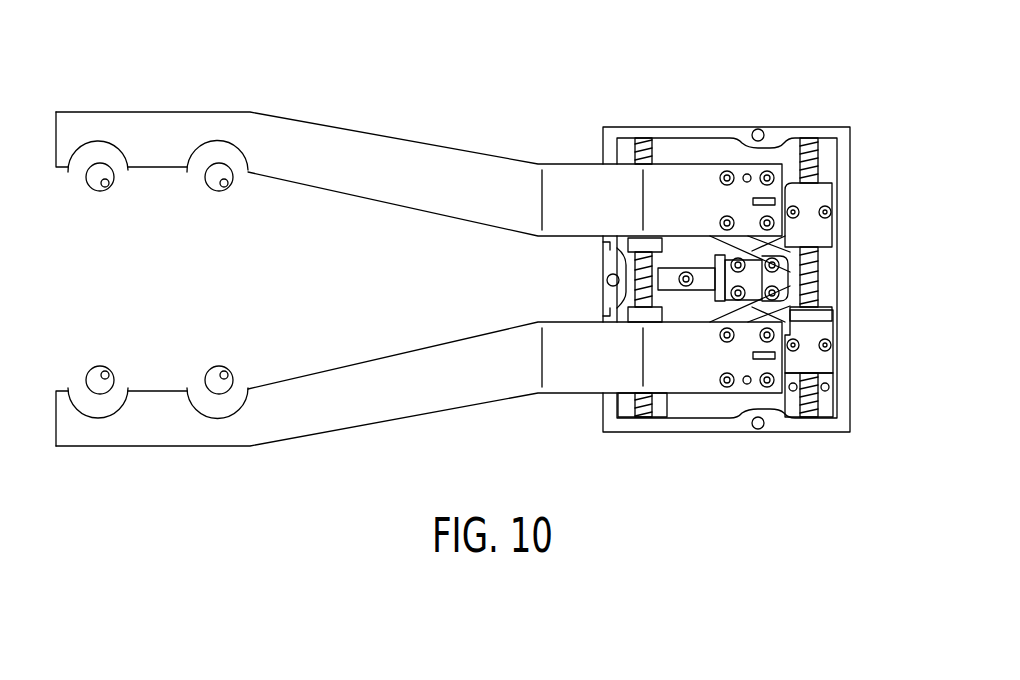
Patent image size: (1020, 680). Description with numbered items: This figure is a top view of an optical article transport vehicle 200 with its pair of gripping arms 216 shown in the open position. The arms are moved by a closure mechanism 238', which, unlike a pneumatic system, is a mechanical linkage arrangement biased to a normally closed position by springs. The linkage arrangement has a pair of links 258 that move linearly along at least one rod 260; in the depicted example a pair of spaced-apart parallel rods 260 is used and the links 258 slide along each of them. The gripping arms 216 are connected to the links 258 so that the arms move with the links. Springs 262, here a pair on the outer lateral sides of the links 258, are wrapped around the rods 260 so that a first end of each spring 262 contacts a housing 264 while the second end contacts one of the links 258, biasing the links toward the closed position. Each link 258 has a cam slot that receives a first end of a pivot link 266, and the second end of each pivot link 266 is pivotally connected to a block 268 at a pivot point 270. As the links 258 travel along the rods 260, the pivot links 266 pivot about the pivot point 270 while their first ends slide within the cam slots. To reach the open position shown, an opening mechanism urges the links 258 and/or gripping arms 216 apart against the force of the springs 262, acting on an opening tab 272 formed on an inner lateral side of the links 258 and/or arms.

The gripper device 200 is at (419, 279).
The gripping arms 216 is at (347, 198).
The closure mechanism 238' is at (734, 217).
The links 258 is at (815, 200).
The rod 260 is at (618, 290).
The springs 262 is at (812, 160).
The housing 264 is at (812, 127).
The pivot link 266 is at (770, 246).
The block 268 is at (790, 288).
The pivot point 270 is at (798, 265).
The opening tab 272 is at (620, 258).